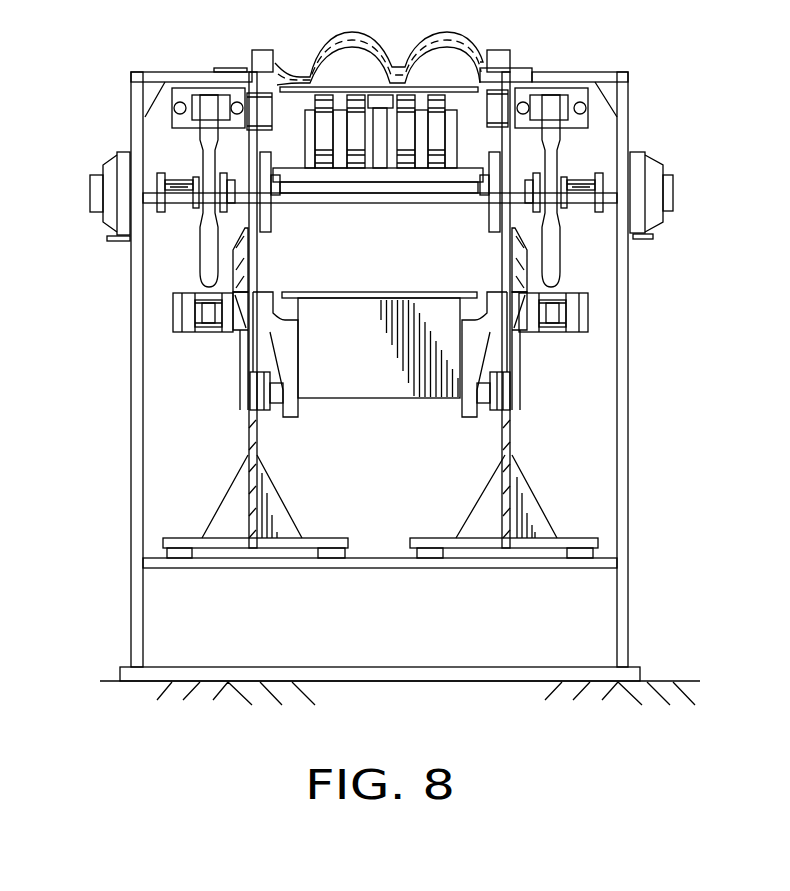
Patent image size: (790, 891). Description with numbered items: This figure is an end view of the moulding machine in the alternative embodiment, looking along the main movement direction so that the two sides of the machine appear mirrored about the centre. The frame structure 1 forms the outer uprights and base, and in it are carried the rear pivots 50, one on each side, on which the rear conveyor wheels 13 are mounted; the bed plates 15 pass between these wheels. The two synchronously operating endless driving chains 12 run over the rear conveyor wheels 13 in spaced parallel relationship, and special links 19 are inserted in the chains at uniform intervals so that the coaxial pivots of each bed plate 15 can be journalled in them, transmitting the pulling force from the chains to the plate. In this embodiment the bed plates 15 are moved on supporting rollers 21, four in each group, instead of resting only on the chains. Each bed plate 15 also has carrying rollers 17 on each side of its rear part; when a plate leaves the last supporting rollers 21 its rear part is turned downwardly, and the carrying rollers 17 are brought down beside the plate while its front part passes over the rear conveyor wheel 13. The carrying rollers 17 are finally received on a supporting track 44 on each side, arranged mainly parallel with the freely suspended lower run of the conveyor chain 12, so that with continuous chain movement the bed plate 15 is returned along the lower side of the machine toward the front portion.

The frame structure 1 is at (628, 503).
The driving chains 12 is at (210, 322).
The rear conveyor wheel 13 is at (200, 275).
The bed plate 15 is at (445, 83).
The carrying roller 17 is at (258, 392).
The special links 19 is at (182, 97).
The supporting rollers 21 is at (352, 120).
The supporting track 44 is at (245, 420).
The rear pivot 50 is at (163, 183).